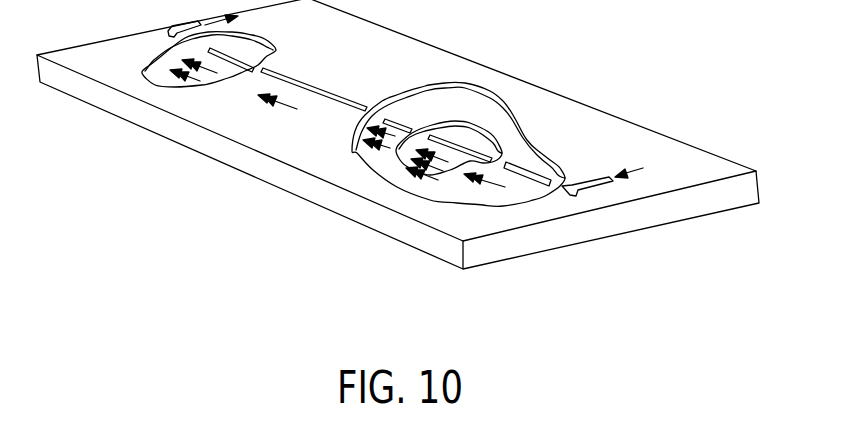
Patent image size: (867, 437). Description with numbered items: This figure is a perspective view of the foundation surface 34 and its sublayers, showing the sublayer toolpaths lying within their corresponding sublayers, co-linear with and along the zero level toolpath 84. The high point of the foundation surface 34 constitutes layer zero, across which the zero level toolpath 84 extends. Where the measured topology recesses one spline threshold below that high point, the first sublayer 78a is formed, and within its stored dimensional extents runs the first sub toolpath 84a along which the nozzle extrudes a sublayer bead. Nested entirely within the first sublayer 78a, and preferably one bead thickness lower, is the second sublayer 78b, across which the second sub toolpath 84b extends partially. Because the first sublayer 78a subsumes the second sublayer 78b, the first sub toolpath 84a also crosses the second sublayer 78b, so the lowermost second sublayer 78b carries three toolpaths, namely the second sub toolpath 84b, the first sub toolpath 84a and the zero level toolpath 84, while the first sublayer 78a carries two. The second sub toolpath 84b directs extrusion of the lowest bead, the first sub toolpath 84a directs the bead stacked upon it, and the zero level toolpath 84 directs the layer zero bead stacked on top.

The foundation surface 34 is at (694, 155).
The first sublayer 78a is at (262, 53).
The second sublayer 78b is at (475, 146).
The zero level toolpath 84 is at (170, 29).
The first sub toolpath 84a is at (406, 121).
The second sub toolpath 84b is at (468, 152).